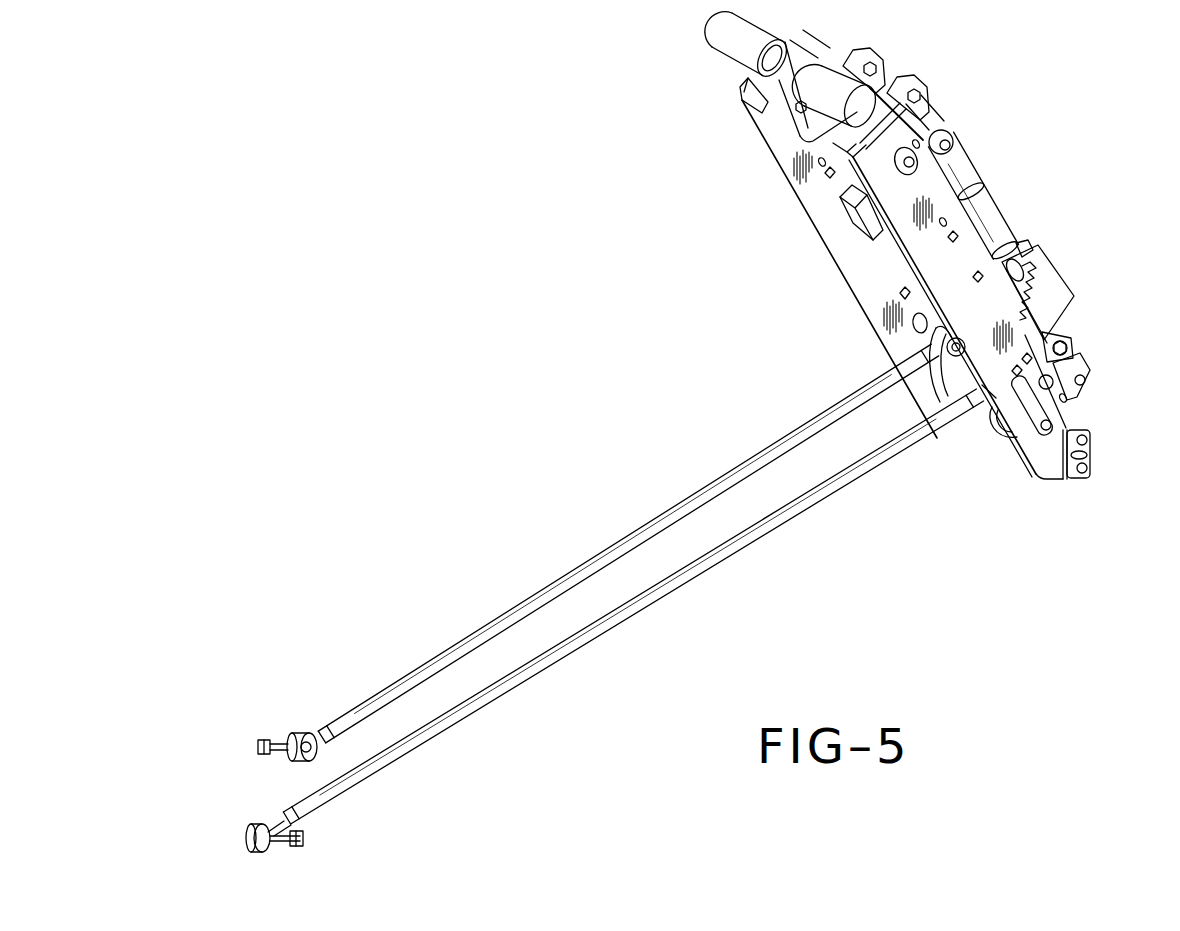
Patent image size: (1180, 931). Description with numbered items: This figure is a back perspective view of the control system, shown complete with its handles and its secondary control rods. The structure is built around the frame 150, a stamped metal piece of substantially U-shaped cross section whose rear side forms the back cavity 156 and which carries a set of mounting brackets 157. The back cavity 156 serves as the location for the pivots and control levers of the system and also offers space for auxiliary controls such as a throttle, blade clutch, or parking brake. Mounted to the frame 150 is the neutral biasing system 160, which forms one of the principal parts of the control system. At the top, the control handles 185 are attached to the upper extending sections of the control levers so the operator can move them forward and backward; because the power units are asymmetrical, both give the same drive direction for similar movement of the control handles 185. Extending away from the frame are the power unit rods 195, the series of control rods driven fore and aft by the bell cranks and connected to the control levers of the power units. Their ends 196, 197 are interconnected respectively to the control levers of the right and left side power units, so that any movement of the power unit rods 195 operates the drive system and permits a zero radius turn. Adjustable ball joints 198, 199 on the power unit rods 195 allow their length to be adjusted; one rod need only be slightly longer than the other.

The frame 150 is at (1033, 447).
The back cavity 156 is at (880, 268).
The mounting brackets 157 is at (1087, 447).
The neutral biasing system 160 is at (1000, 185).
The control handles 185 is at (737, 50).
The power unit rods 195 is at (597, 632).
The end of power unit rod 196 is at (300, 824).
The end of power unit rod 197 is at (257, 747).
The adjustable ball joint 198 is at (927, 357).
The adjustable ball joint 199 is at (330, 724).